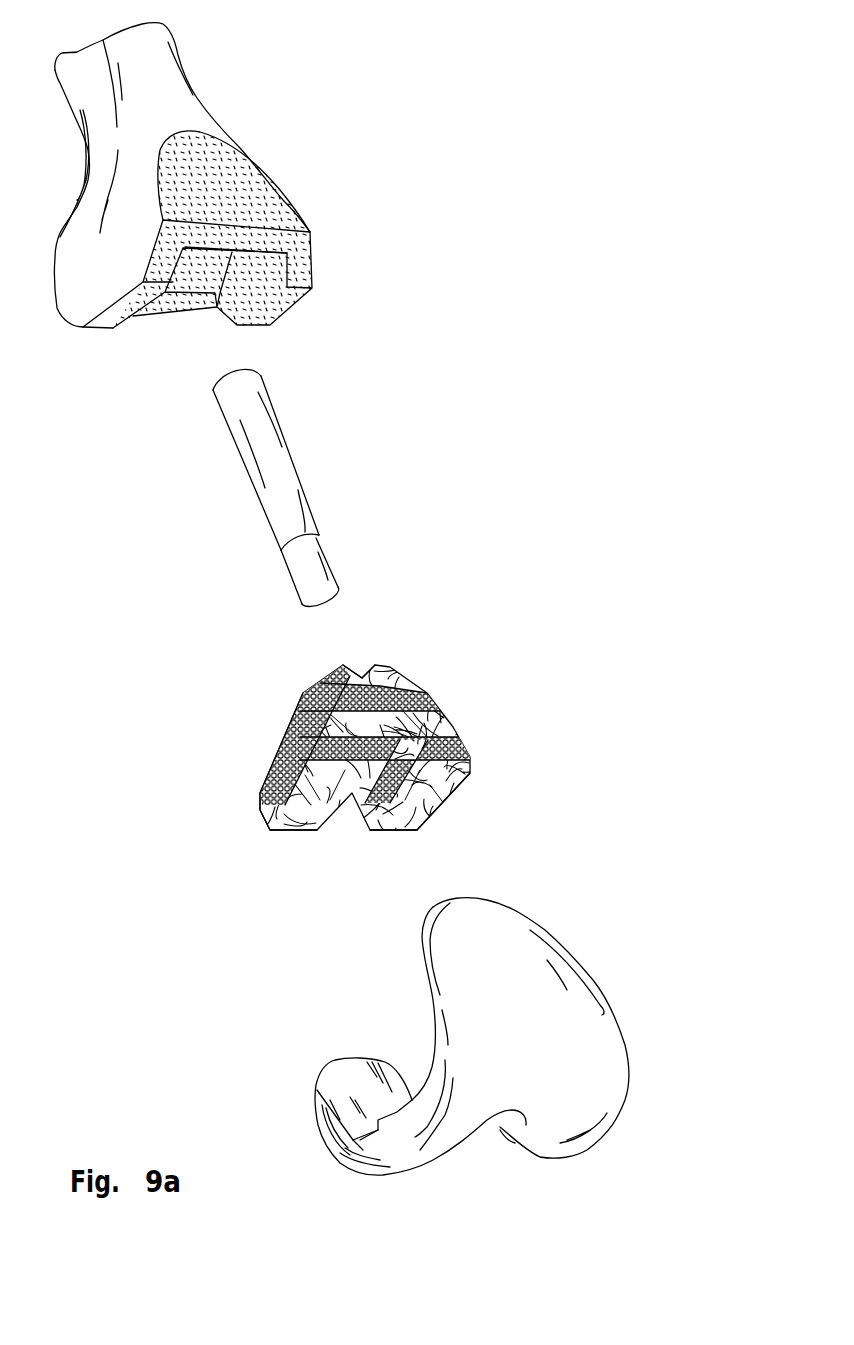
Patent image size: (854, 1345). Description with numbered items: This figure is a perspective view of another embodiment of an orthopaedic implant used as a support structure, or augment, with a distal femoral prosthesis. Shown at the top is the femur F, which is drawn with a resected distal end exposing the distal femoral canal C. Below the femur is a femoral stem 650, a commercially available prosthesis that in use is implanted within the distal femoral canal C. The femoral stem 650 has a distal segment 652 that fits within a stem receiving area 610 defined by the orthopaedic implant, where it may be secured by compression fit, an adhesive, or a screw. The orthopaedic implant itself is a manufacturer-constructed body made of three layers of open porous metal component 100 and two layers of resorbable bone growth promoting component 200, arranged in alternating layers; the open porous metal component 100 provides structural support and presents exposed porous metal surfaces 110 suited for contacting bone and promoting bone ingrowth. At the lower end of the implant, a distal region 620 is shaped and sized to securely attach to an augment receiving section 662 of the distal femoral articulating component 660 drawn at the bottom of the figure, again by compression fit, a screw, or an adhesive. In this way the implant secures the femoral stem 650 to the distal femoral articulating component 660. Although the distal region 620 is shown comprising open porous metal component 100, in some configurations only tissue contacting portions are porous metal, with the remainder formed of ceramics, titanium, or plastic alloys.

The femur F is at (167, 67).
The distal femoral canal C is at (210, 256).
The femoral stem 650 is at (288, 462).
The distal segment 652 is at (298, 565).
The open porous metal component 100 is at (455, 725).
The resorbable bone growth promoting component 200 is at (427, 692).
The exposed porous metal surface 110 is at (287, 747).
The stem receiving area 610 is at (362, 677).
The distal region 620 is at (430, 818).
The distal femoral articulating component 660 is at (593, 1043).
The augment receiving section 662 is at (410, 1095).